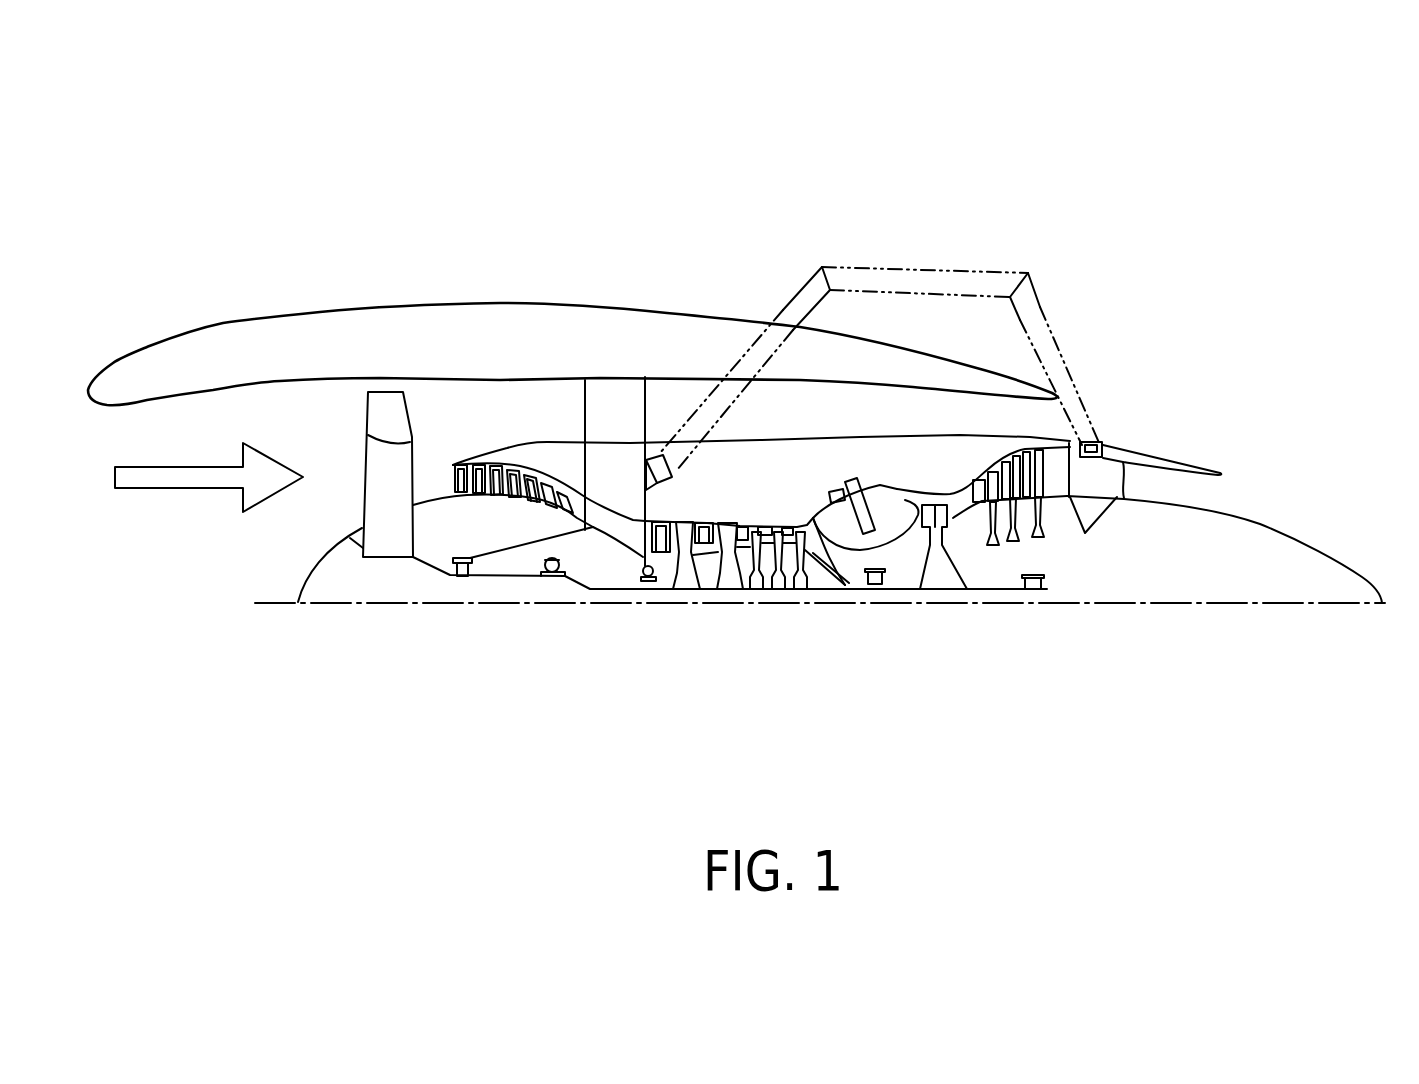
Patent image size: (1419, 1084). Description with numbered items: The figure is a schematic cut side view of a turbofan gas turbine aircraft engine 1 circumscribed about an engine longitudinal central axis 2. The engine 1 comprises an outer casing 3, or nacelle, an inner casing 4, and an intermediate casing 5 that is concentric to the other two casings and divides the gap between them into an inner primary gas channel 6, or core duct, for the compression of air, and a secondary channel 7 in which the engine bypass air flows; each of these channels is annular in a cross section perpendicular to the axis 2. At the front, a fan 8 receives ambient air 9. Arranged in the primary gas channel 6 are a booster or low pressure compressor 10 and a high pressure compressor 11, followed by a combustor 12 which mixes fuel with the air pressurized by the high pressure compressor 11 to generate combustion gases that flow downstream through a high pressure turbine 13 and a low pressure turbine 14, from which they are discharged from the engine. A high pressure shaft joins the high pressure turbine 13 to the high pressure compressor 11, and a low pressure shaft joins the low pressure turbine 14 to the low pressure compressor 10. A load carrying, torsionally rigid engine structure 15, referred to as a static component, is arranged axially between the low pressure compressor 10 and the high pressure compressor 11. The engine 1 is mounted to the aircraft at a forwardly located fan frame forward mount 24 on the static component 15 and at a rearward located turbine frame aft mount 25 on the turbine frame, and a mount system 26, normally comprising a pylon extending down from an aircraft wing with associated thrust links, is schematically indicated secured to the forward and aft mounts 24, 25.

The turbofan gas turbine aircraft engine 1 is at (1215, 179).
The engine longitudinal central axis 2 is at (277, 603).
The outer casing 3 is at (197, 358).
The inner casing 4 is at (592, 567).
The intermediate casing 5 is at (542, 453).
The primary gas channel 6 is at (437, 468).
The secondary channel 7 is at (524, 418).
The fan 8 is at (382, 402).
The ambient air 9 is at (160, 483).
The low pressure compressor 10 is at (466, 519).
The high pressure compressor 11 is at (764, 624).
The combustor 12 is at (897, 523).
The high pressure turbine 13 is at (961, 626).
The low pressure turbine 14 is at (1046, 556).
The load carrying, torsionally rigid engine structure 15 is at (632, 353).
The fan frame forward mount 24 is at (670, 462).
The turbine frame aft mount 25 is at (1102, 447).
The mount system 26 is at (913, 285).